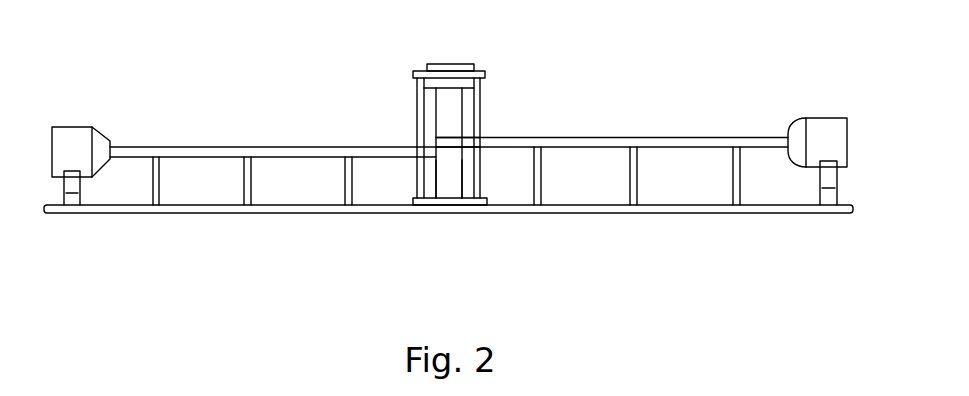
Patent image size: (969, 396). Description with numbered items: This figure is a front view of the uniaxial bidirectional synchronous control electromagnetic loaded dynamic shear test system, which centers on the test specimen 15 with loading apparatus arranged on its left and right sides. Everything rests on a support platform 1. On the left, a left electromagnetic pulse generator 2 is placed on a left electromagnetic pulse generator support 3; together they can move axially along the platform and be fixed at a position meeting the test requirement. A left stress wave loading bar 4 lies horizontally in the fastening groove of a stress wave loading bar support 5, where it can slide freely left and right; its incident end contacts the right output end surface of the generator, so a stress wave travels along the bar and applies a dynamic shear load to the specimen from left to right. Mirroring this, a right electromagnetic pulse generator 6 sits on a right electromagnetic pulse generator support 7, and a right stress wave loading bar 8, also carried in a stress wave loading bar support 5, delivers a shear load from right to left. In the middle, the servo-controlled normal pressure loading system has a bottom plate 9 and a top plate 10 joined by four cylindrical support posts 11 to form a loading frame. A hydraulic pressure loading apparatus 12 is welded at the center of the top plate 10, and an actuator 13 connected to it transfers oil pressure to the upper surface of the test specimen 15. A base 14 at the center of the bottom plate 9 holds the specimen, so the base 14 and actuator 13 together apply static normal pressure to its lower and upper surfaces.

The support platform 1 is at (51, 213).
The left electromagnetic pulse generator 2 is at (70, 140).
The left electromagnetic pulse generator support 3 is at (71, 192).
The left stress wave loading bar 4 is at (188, 152).
The stress wave loading bar support 5 is at (243, 192).
The right electromagnetic pulse generator 6 is at (820, 140).
The right electromagnetic pulse generator support 7 is at (826, 198).
The right stress wave loading bar 8 is at (654, 143).
The bottom plate 9 is at (441, 205).
The top plate 10 is at (470, 77).
The support post 11 is at (419, 123).
The hydraulic pressure loading apparatus 12 is at (428, 69).
The actuator 13 is at (440, 104).
The base 14 is at (457, 180).
The test specimen 15 is at (450, 143).